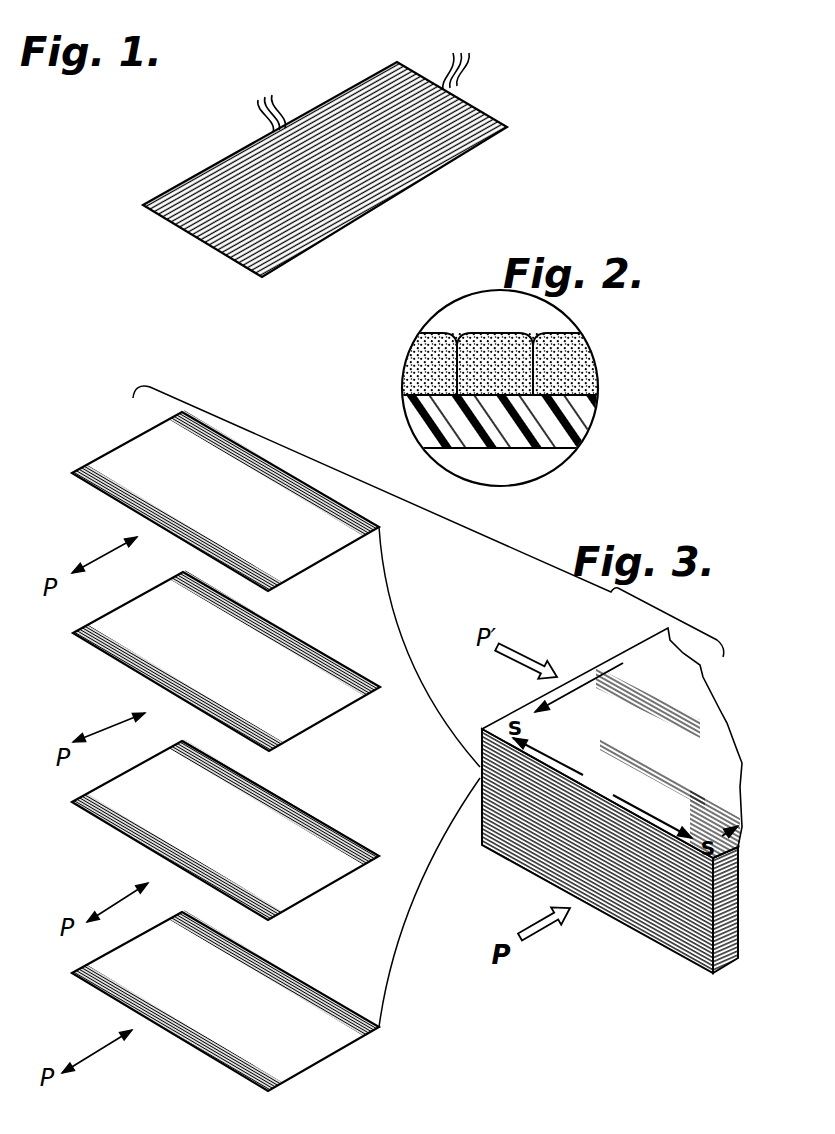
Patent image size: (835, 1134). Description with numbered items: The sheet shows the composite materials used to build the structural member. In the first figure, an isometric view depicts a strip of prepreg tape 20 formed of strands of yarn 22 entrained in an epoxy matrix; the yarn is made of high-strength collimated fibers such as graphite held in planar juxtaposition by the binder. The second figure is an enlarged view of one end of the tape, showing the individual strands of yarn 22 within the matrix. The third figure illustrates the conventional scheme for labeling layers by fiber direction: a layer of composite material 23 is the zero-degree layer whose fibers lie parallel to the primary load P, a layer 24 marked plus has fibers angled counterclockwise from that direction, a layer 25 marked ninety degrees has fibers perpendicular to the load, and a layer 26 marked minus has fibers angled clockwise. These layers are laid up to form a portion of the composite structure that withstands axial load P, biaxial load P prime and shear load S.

In FIG. 1, the tape 20 is at (413, 184).
In FIG. 1, the yarn 22 is at (359, 78).
In FIG. 2, the yarn 22 is at (566, 368).
In FIG. 3, the 0° layer of composite material 23 is at (317, 1050).
In FIG. 3, the + layer of composite material 24 is at (323, 873).
In FIG. 3, the 90° layer of composite material 25 is at (115, 450).
In FIG. 3, the − layer of composite material 26 is at (343, 694).